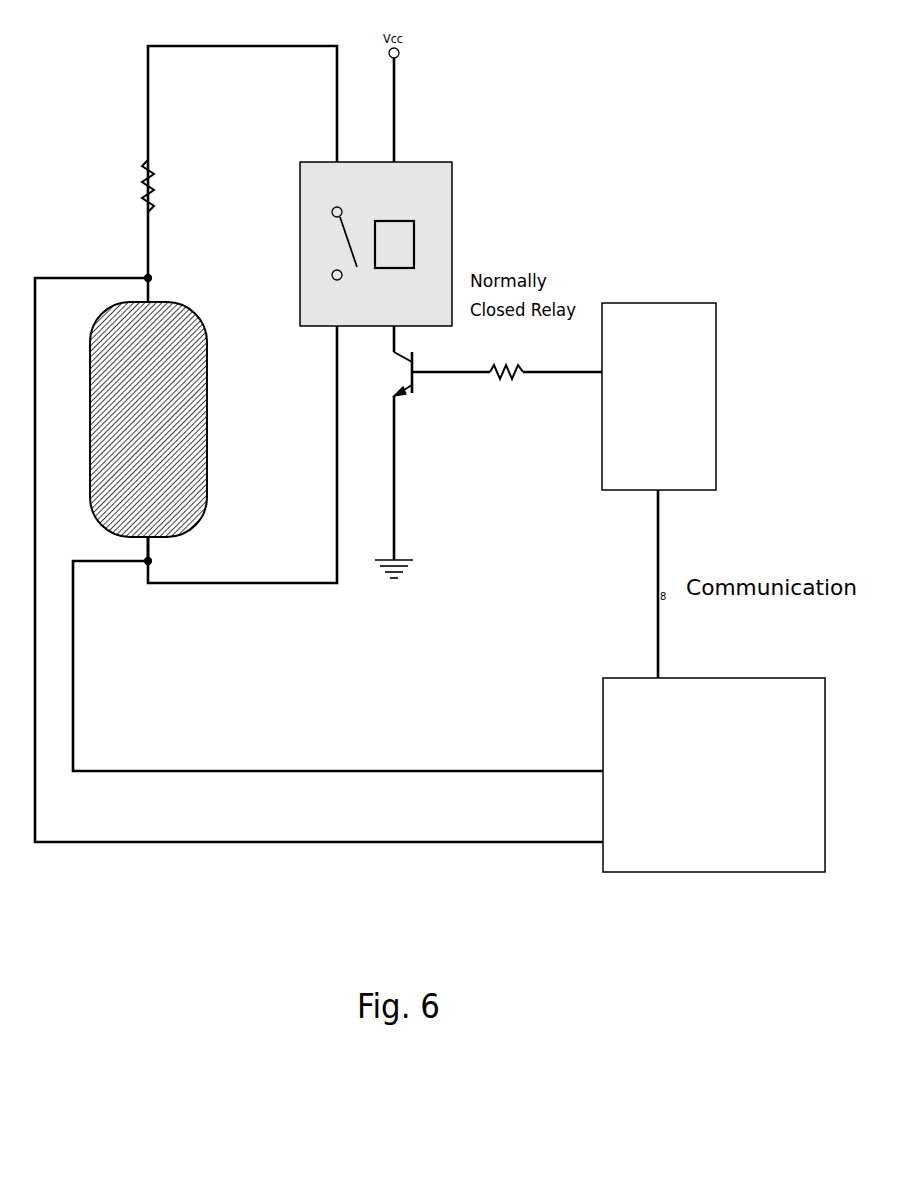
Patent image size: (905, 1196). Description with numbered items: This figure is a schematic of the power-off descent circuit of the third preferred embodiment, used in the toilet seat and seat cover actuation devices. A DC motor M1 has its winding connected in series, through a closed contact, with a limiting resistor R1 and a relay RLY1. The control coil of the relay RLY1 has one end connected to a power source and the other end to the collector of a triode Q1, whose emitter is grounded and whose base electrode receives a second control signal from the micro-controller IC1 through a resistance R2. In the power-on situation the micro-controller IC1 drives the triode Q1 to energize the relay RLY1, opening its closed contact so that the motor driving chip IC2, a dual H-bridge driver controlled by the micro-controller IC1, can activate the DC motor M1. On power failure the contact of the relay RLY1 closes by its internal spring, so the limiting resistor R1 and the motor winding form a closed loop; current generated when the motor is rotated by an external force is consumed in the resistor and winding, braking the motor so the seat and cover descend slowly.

The limiting resistor R1 is at (156, 186).
The DC motor M1 is at (148, 419).
The relay RLY1 is at (394, 244).
The triode Q1 is at (406, 383).
The resistance R2 is at (506, 388).
The micro-controller (MCU) IC1 is at (659, 388).
The motor driving chip IC2 is at (714, 766).